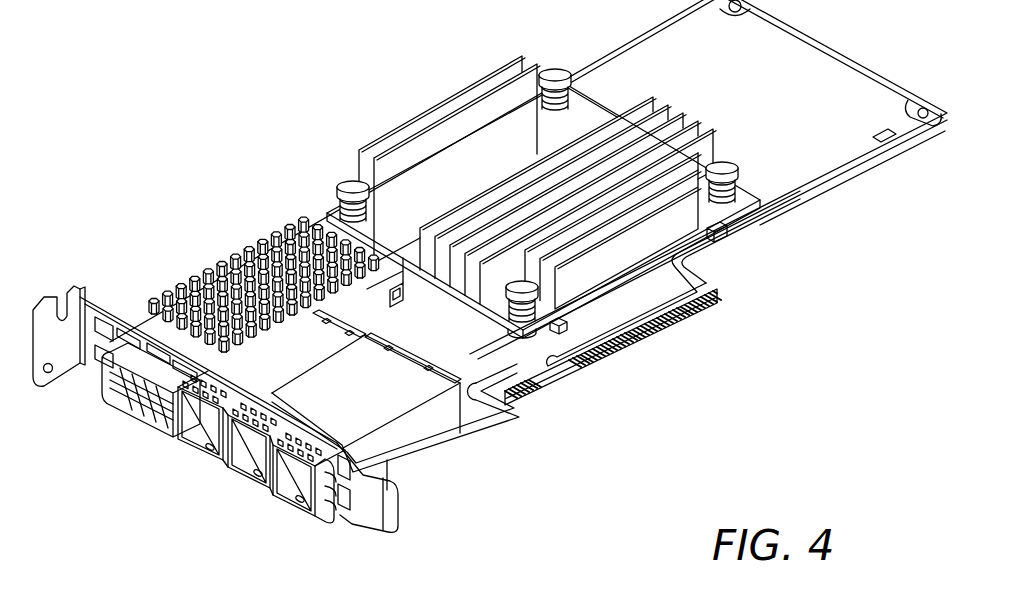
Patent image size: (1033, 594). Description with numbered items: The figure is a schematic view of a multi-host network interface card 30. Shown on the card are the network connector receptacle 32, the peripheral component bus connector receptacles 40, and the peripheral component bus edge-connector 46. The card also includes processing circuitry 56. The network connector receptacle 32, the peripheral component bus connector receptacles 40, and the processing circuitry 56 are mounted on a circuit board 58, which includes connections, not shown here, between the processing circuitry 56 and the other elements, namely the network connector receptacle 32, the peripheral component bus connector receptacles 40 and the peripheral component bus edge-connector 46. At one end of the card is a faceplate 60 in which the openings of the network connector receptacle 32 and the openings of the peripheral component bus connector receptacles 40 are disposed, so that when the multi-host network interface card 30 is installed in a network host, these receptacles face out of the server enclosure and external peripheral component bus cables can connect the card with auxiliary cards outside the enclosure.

The multi-host network interface card 30 is at (292, 85).
The network connector receptacle 32 is at (134, 420).
The peripheral component bus connector receptacles 40 is at (310, 487).
The peripheral component bus edge-connector 46 is at (548, 392).
The processing circuitry 56 is at (600, 107).
The circuit board 58 is at (850, 178).
The faceplate 60 is at (117, 300).